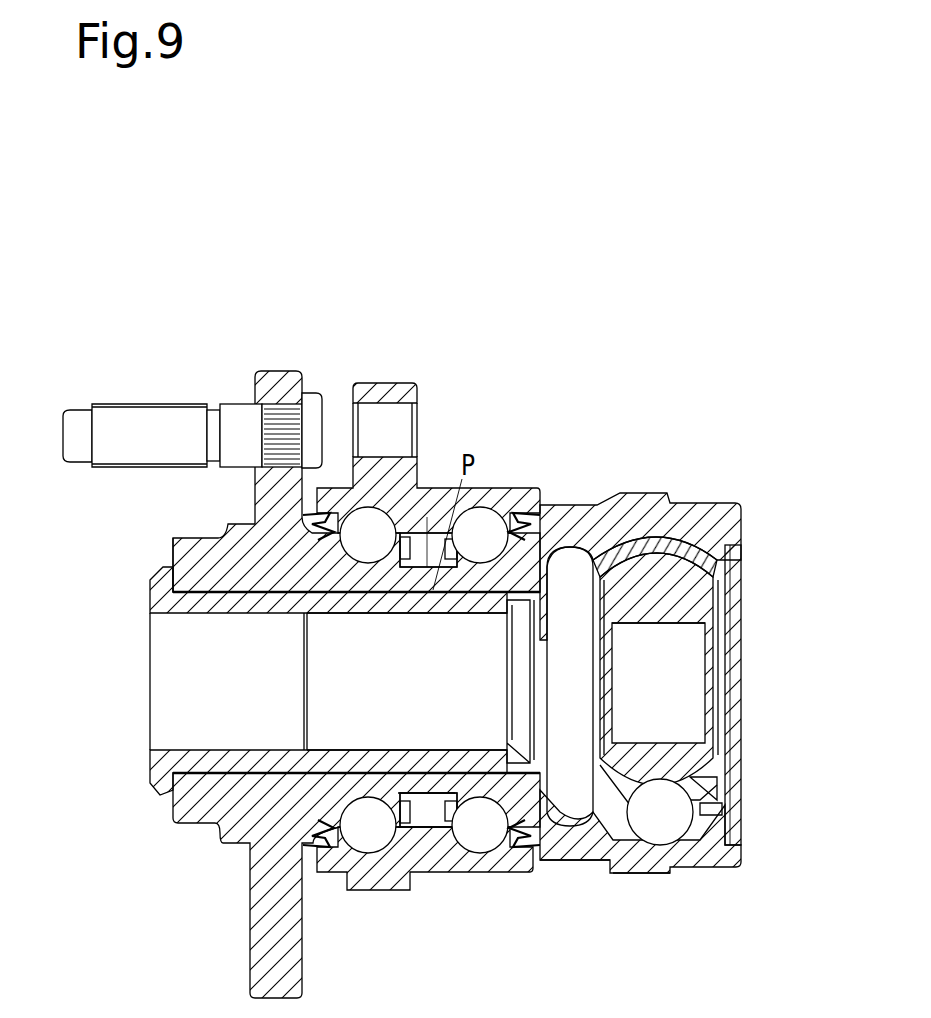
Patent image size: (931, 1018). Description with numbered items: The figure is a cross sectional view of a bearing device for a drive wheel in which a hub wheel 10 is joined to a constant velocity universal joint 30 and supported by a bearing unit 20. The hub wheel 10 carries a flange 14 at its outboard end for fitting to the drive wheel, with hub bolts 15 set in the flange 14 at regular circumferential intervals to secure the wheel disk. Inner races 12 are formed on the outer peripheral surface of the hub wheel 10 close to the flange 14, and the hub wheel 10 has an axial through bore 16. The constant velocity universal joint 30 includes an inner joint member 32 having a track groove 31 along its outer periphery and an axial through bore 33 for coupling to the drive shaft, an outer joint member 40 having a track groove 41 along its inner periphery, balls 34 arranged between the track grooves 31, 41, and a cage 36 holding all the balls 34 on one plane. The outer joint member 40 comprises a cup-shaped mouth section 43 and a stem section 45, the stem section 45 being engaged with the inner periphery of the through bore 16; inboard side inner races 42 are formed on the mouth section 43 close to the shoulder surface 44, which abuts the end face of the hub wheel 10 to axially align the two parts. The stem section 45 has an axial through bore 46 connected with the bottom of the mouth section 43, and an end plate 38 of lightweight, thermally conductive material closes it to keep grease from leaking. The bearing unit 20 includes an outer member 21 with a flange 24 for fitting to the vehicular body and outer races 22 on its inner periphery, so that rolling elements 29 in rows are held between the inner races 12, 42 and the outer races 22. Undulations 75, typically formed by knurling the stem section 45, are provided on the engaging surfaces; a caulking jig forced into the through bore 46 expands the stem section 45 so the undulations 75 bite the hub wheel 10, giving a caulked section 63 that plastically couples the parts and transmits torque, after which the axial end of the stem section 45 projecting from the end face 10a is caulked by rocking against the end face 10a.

The hub wheel 10 is at (243, 912).
The end face 10a is at (173, 538).
The inner races 12 is at (305, 622).
The flange 14 is at (257, 380).
The hub bolts 15 is at (140, 410).
The axial through bore 16 is at (415, 770).
The bearing unit 20 is at (500, 492).
The outer member 21 is at (434, 498).
The outer races 22 is at (340, 516).
The flange 24 is at (390, 392).
The rolling elements 29 is at (375, 556).
The constant velocity universal joint 30 is at (722, 482).
The track groove 31 is at (713, 773).
The inner joint member 32 is at (712, 748).
The axial through bore 33 is at (673, 697).
The balls 34 is at (670, 828).
The cage 36 is at (723, 816).
The end plate 38 is at (508, 705).
The outer joint member 40 is at (650, 486).
The track groove 41 is at (613, 874).
The inner races 42 is at (500, 557).
The mouth section 43 is at (633, 492).
The shoulder surface 44 is at (445, 835).
The stem section 45 is at (431, 790).
The axial through bore 46 is at (363, 697).
The caulked section 63 is at (153, 573).
The undulations 75 is at (224, 598).